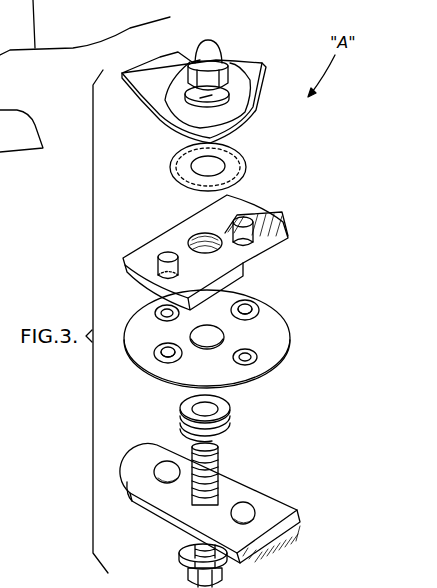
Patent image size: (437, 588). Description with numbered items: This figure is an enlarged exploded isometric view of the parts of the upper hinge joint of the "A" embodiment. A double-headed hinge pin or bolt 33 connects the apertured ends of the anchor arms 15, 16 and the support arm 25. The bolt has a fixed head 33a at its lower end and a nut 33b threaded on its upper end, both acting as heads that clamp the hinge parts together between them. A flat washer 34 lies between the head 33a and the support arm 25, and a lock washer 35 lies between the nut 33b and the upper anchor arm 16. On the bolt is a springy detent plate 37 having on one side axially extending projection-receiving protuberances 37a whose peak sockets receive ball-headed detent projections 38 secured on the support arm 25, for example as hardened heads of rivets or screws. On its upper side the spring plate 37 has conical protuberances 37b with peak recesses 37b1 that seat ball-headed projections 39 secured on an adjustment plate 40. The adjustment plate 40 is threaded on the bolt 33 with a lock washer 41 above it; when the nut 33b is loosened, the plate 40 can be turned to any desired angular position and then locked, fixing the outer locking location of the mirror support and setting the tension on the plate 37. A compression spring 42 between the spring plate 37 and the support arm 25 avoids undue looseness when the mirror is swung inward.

The anchor arm 15 is at (140, 90).
The upper anchor arm 16 is at (256, 98).
The support arm 25 is at (291, 505).
The hinge bolt 33 is at (222, 457).
The bolt head 33a is at (192, 576).
The nut 33b is at (222, 52).
The flat washer 34 is at (185, 545).
The lock washer 35 is at (233, 88).
The springy detent plate 37 is at (291, 341).
The projection-receiving protuberances 37a is at (155, 311).
The conical protuberances 37b is at (260, 311).
The peak recesses 37b1 is at (246, 305).
The ball-headed detent projections 38 is at (160, 470).
The ball-headed projections 39 is at (155, 283).
The adjustment plate 40 is at (140, 250).
The lock washer 41 is at (240, 165).
The compression spring 42 is at (229, 410).